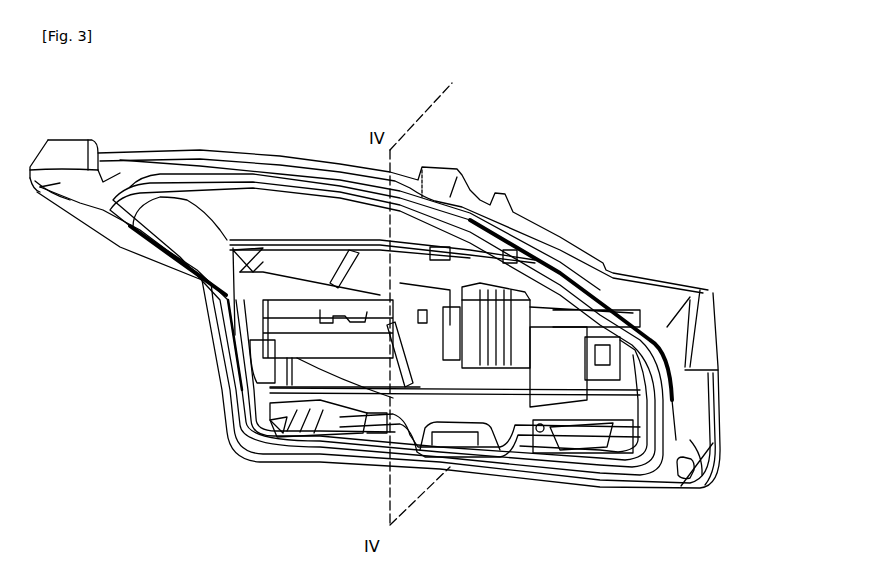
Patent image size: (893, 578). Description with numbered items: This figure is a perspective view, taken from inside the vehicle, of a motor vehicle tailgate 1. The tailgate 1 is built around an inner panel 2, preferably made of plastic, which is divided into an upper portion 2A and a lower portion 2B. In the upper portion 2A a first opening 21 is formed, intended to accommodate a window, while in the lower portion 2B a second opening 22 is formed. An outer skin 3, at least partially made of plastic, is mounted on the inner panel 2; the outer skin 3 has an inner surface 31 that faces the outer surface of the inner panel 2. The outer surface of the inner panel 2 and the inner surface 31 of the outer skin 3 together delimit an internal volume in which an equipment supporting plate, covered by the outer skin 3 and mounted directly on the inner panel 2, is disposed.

The tailgate 1 is at (150, 125).
The inner panel 2 is at (755, 405).
The upper portion 2A is at (537, 200).
The lower portion 2B is at (170, 395).
The first opening 21 is at (270, 216).
The second opening 22 is at (452, 420).
The outer skin 3 is at (385, 430).
The inner surface 31 is at (545, 390).